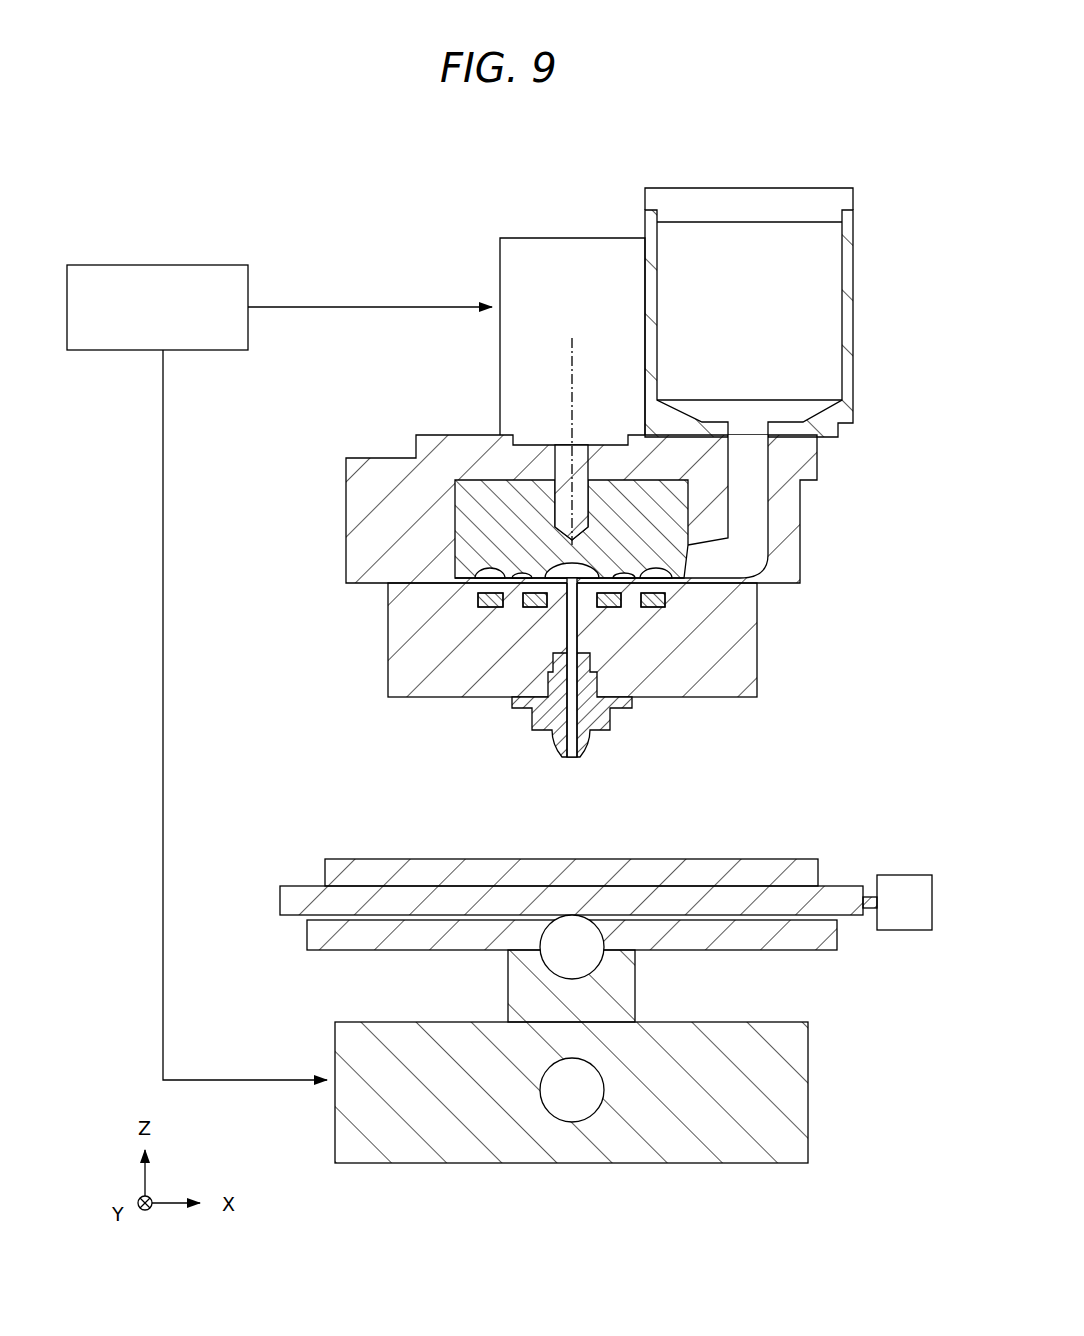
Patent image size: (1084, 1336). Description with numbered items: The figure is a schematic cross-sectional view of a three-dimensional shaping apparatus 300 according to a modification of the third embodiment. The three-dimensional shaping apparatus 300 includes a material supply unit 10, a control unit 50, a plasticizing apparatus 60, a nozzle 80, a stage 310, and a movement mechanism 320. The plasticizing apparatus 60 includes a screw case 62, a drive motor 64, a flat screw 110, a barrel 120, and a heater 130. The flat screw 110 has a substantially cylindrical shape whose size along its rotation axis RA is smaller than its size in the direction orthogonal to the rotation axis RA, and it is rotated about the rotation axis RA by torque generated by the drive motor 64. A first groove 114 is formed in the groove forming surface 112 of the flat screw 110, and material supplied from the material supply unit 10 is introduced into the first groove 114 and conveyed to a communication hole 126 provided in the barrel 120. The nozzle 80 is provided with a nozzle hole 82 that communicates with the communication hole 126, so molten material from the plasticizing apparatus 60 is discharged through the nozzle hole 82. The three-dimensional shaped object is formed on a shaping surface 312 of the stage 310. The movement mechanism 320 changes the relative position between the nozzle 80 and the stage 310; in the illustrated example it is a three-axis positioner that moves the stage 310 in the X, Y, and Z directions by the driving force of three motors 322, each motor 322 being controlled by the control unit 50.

The three-dimensional shaping apparatus 300 is at (862, 128).
The material supply unit 10 is at (845, 175).
The control unit 50 is at (167, 297).
The plasticizing apparatus 60 is at (851, 457).
The screw case 62 is at (373, 490).
The drive motor 64 is at (540, 280).
The rotation axis RA is at (572, 390).
The flat screw 110 is at (477, 530).
The groove forming surface 112 is at (750, 508).
The first groove 114 is at (470, 572).
The barrel 120 is at (697, 630).
The communication hole 126 is at (567, 627).
The heater 130 is at (653, 608).
The nozzle 80 is at (556, 741).
The nozzle hole 82 is at (566, 715).
The movement mechanism 320 is at (276, 874).
The stage 310 is at (772, 875).
The shaping surface 312 is at (625, 859).
The motor 322 is at (901, 897).